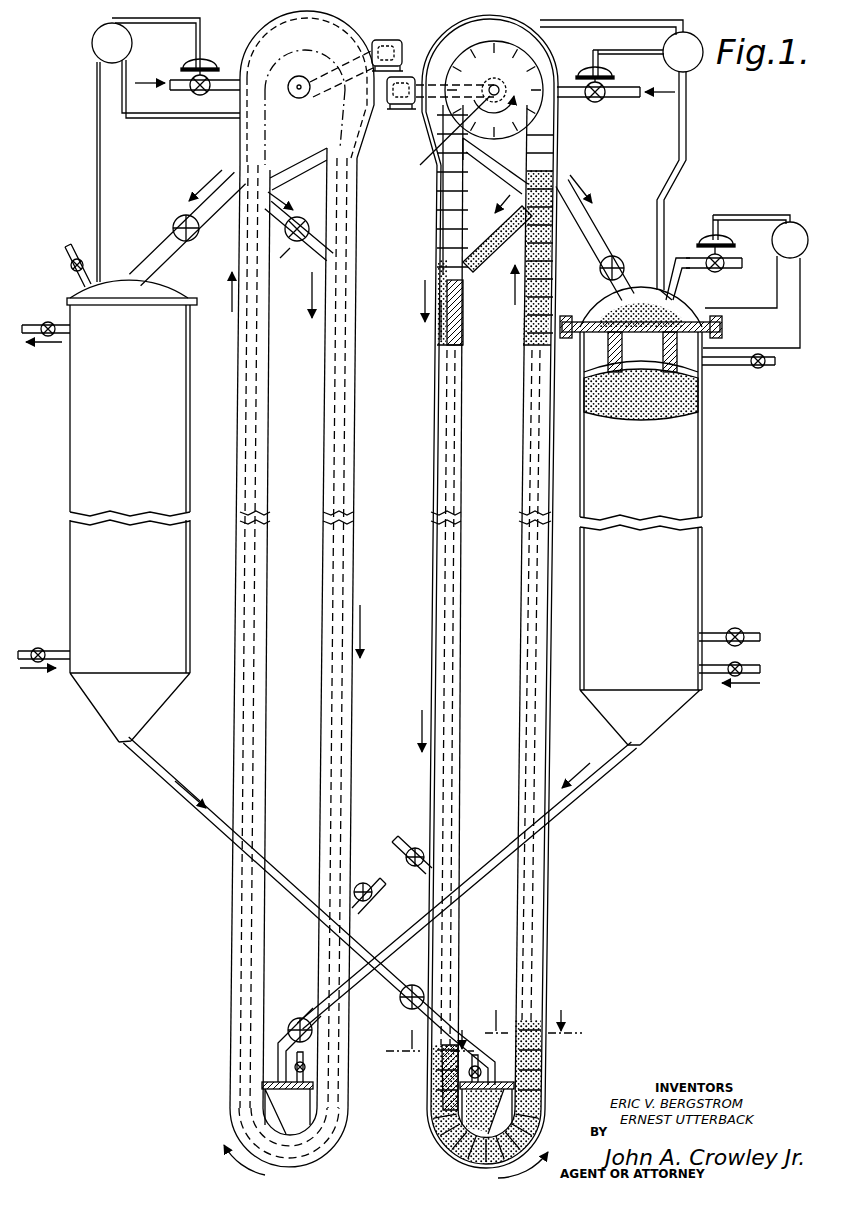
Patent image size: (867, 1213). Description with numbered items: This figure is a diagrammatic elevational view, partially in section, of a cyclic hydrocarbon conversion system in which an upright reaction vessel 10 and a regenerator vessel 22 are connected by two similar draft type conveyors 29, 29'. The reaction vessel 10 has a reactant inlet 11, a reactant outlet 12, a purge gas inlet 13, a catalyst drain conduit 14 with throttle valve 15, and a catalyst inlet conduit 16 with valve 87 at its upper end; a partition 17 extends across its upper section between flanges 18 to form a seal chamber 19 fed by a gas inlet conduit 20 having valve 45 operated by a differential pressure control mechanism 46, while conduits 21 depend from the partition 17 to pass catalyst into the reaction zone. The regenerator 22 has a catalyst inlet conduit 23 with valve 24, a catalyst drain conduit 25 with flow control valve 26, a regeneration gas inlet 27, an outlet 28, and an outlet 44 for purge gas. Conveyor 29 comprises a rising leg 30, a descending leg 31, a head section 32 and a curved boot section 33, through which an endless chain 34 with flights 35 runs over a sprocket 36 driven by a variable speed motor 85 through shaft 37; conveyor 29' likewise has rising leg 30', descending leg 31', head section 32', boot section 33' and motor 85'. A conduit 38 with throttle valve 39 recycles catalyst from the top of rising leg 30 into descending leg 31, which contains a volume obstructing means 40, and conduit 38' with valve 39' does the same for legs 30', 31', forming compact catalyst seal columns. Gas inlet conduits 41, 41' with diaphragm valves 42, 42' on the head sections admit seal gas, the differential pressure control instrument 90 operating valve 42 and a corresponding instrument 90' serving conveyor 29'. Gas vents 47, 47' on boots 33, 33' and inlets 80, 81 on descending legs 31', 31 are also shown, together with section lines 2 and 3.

The reaction vessel 10 is at (703, 475).
The reactant inlet 11 is at (746, 630).
The reactant outlet 12 is at (726, 367).
The purge gas inlet 13 is at (765, 672).
The catalyst drain conduit 14 is at (615, 775).
The throttle valve 15 is at (300, 1018).
The catalyst inlet conduit 16 is at (603, 236).
The partition 17 is at (723, 328).
The flanges 18 is at (578, 334).
The seal chamber 19 is at (700, 288).
The gas inlet conduit 20 is at (690, 247).
The conduits 21 is at (590, 378).
The regenerator vessel 22 is at (70, 468).
The catalyst inlet conduit 23 is at (156, 248).
The valve 24 is at (180, 222).
The catalyst drain conduit 25 is at (162, 782).
The flow control valve 26 is at (410, 986).
The regeneration gas inlet 27 is at (52, 648).
The regeneration gas outlet 28 is at (60, 320).
The draft type conveyor 29 is at (473, 225).
The draft type conveyor 29' is at (331, 194).
The rising leg 30 is at (520, 604).
The rising leg 30' is at (233, 636).
The descending leg 31 is at (431, 607).
The descending leg 31' is at (323, 628).
The head section 32 is at (488, 90).
The head section 32' is at (294, 88).
The boot section 33 is at (471, 1099).
The boot section 33' is at (296, 1141).
The endless chain 34 is at (442, 249).
The flights 35 is at (440, 225).
The sprocket 36 is at (548, 147).
The shaft 37 is at (442, 140).
The conduit 38 is at (495, 182).
The conduit 38' is at (289, 259).
The throttle valve 39 is at (497, 243).
The flow control valve 39' is at (299, 219).
The volume obstructing means 40 is at (463, 313).
The gas inlet conduit 41 is at (616, 105).
The conduit 41' is at (183, 64).
The diaphragm valve 42 is at (620, 76).
The diaphragm valve 42' is at (187, 93).
The outlet 44 is at (70, 266).
The valve 45 is at (722, 271).
The differential pressure control mechanism 46 is at (772, 240).
The gas vent conduit 47 is at (433, 1071).
The gas vent 47' is at (344, 1057).
The inlet 80 is at (366, 888).
The inlet 81 is at (414, 848).
The variable speed motor 85 is at (439, 110).
The motor 85' is at (387, 41).
The valve 87 is at (602, 275).
The differential pressure control instrument 90 is at (632, 155).
The pump 90' is at (144, 150).
The section line 2- 2 is at (533, 1011).
The section line 3- 3 is at (430, 1029).